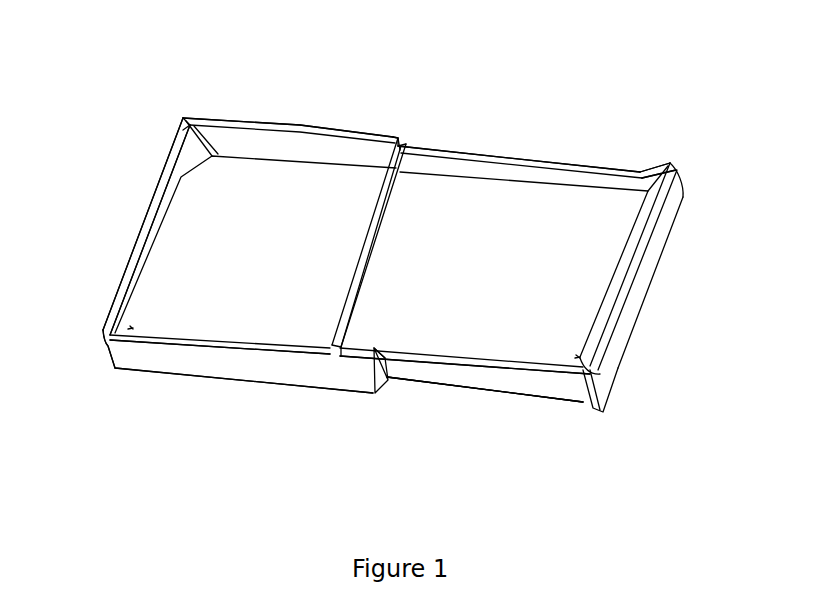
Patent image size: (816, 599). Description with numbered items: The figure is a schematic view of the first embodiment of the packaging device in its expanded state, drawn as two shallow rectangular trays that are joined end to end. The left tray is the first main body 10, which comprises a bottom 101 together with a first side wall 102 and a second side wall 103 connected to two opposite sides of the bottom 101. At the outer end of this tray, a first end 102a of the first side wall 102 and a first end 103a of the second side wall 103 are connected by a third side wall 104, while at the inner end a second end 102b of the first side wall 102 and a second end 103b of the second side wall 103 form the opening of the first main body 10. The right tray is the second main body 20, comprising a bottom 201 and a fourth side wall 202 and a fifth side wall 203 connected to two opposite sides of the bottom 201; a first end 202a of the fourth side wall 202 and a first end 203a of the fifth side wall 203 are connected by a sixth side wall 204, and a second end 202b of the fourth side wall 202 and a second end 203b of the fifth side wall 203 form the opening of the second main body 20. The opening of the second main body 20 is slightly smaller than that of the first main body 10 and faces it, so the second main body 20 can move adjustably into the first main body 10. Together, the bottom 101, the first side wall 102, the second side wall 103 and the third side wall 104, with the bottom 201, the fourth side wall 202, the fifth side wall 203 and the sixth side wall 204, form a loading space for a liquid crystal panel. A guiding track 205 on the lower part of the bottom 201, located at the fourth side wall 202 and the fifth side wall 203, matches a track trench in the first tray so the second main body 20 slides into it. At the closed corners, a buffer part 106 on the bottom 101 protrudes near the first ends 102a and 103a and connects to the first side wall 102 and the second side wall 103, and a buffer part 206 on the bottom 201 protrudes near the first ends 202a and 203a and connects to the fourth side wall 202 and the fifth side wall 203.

The first main body 10 is at (112, 230).
The second main body 20 is at (657, 318).
The bottom 101 is at (297, 312).
The bottom 201 is at (509, 312).
The first side wall 102 is at (303, 125).
The fourth side wall 202 is at (519, 157).
The first end of the first side wall 102a is at (200, 120).
The second end of the first side wall 102b is at (457, 149).
The first end of the fourth side wall 202a is at (663, 163).
The second end of the fourth side wall 202b is at (399, 140).
The second side wall 103 is at (288, 348).
The fifth side wall 203 is at (453, 355).
The first end of the second side wall 103a is at (107, 350).
The second end of the second side wall 103b is at (372, 392).
The first end of the fifth side wall 203a is at (620, 368).
The second end of the fifth side wall 203b is at (340, 343).
The third side wall 104 is at (123, 280).
The sixth side wall 204 is at (640, 245).
The buffer part 106 is at (180, 118).
The buffer part 206 is at (640, 170).
The guiding track 205 is at (530, 397).